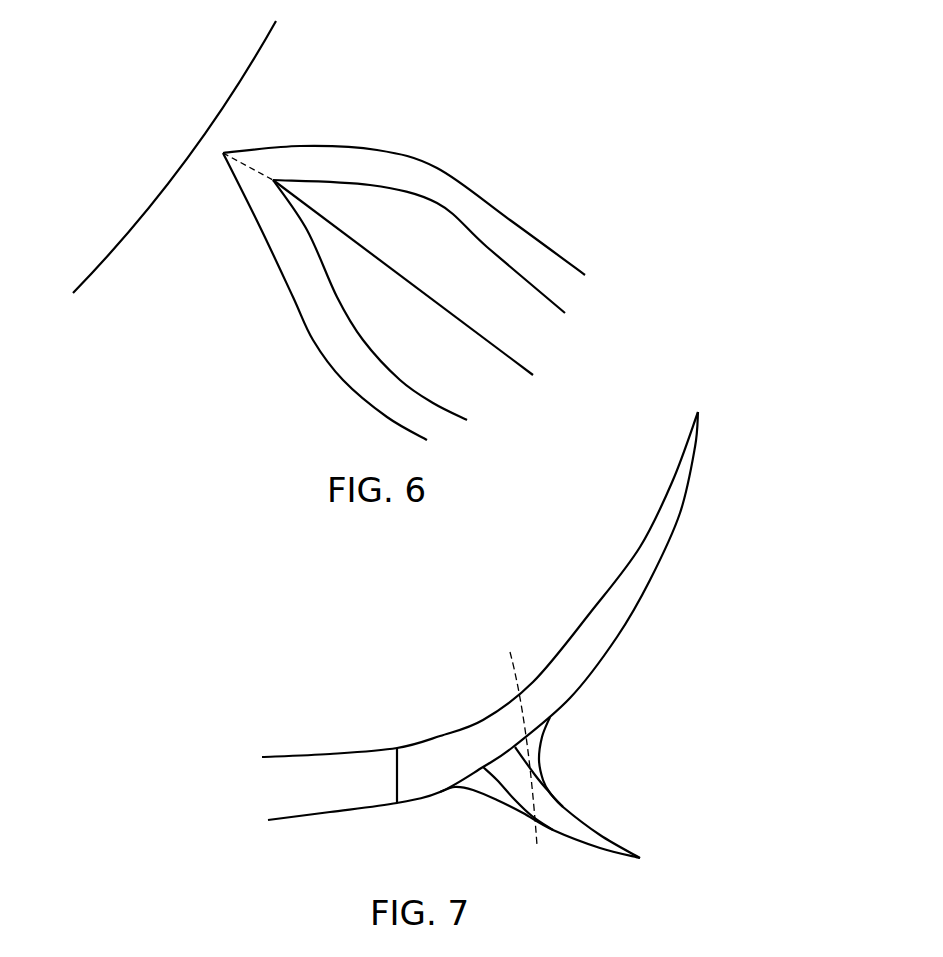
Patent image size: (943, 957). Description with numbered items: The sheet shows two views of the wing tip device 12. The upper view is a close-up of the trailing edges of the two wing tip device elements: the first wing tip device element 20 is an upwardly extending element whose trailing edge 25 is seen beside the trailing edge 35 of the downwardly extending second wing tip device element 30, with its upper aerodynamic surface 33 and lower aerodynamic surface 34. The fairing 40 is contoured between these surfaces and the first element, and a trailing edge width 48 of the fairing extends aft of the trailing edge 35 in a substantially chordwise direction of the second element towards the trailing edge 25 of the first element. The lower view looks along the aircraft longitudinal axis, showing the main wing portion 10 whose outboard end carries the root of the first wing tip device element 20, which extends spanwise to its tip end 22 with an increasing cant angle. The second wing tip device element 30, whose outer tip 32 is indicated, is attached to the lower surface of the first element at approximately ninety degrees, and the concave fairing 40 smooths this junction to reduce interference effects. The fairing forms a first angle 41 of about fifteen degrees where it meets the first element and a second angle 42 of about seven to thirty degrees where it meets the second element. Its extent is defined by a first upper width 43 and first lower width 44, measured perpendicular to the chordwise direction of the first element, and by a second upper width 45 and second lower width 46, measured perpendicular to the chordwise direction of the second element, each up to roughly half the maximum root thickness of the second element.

In FIG. 7, the main wing portion 10 is at (320, 802).
In FIG. 7, the wing tip device 12 is at (710, 628).
In FIG. 6, the first wing tip device element 20 is at (173, 238).
In FIG. 7, the first wing tip device element 20 is at (500, 722).
In FIG. 7, the tip end 22 is at (700, 410).
In FIG. 6, the trailing edge 25 is at (185, 167).
In FIG. 6, the second wing tip device element 30 is at (465, 272).
In FIG. 7, the second wing tip device element 30 is at (585, 835).
In FIG. 7, the blade tip 32 is at (647, 857).
In FIG. 6, the upper aerodynamic surface 33 is at (523, 328).
In FIG. 6, the lower aerodynamic surface 34 is at (483, 377).
In FIG. 6, the trailing edge 35 is at (520, 362).
In FIG. 6, the fairing 40 is at (430, 190).
In FIG. 7, the fairing 40 is at (477, 790).
In FIG. 7, the first angle 41 is at (437, 793).
In FIG. 7, the second angle 42 is at (517, 807).
In FIG. 7, the first upper width 43 is at (517, 735).
In FIG. 7, the first lower width 44 is at (462, 778).
In FIG. 7, the second upper width 45 is at (539, 860).
In FIG. 7, the second lower width 46 is at (487, 770).
In FIG. 6, the trailing edge width 48 is at (257, 167).